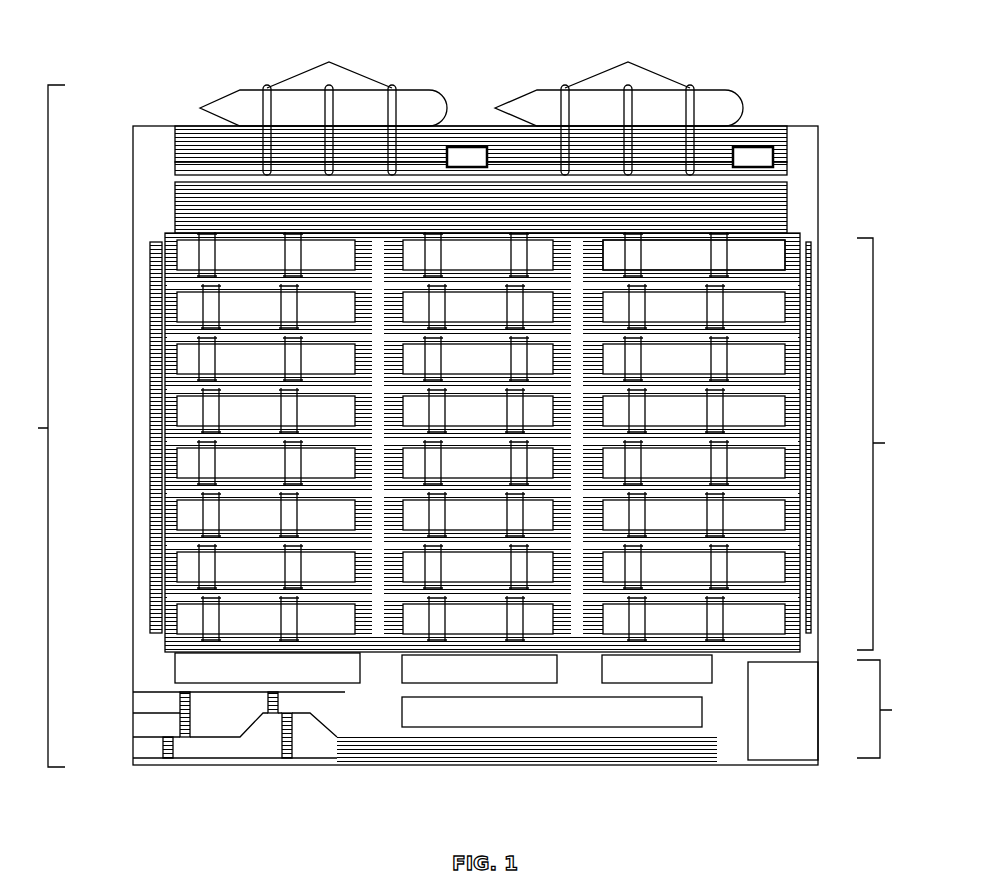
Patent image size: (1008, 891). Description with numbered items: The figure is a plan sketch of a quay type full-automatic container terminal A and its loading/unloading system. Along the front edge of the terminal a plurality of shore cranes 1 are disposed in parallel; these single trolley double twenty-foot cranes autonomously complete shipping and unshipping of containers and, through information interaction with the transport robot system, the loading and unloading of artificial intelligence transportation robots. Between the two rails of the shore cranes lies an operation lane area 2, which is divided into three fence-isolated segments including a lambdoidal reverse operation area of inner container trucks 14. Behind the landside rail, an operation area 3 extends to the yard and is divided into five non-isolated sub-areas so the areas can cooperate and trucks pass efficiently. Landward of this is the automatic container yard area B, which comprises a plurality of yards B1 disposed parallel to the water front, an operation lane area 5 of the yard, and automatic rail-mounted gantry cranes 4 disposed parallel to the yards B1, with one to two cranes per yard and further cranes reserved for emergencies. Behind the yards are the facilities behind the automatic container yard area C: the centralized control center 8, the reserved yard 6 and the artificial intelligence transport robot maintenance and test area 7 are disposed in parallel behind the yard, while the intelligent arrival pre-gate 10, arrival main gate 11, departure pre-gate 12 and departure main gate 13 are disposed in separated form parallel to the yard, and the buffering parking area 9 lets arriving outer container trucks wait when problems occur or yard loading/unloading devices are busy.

The shore crane 1 is at (329, 62).
The operation lane area between two rails of shore cranes 2 is at (457, 147).
The operation area from rear side of landside rail of shore cranes to yard 3 is at (388, 213).
The automatic rail-mounted gantry crane in yard 4 is at (642, 257).
The operation lane area of yard 5 is at (150, 349).
The reserved yard 6 is at (478, 670).
The artificial intelligence transport robot maintenance and test area 7 is at (265, 667).
The centralized control center 8 is at (780, 712).
The buffering parking area 9 is at (552, 710).
The arrival pre-gate 10 is at (163, 748).
The arrival main gate 11 is at (293, 735).
The departure pre-gate 12 is at (268, 703).
The departure main gate 13 is at (180, 716).
The lambdoidal reverse operation area of inner container trucks 14 is at (470, 152).
The container terminal A is at (36, 426).
The automatic container yard area B is at (885, 444).
The yard B1 is at (770, 258).
The facilities behind the automatic container yard area C is at (888, 709).